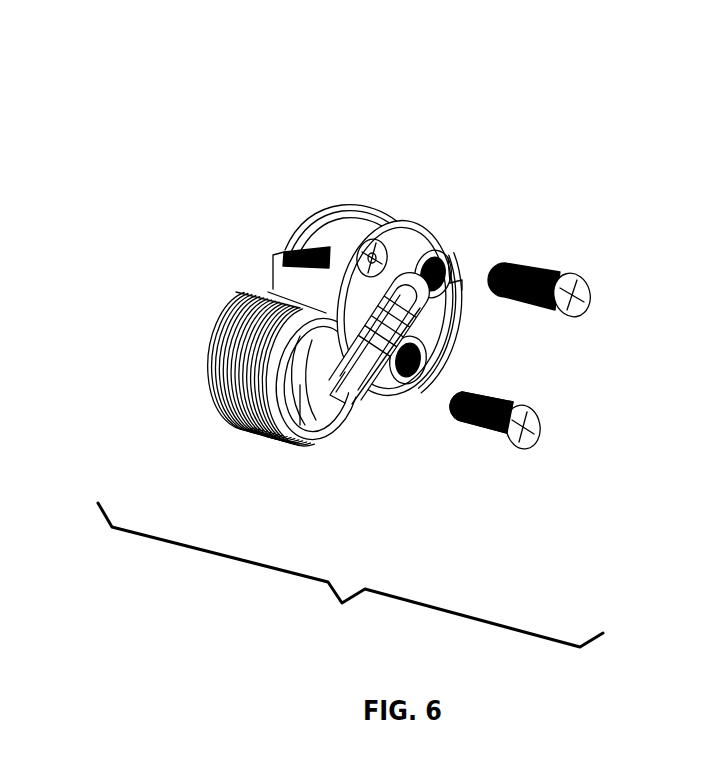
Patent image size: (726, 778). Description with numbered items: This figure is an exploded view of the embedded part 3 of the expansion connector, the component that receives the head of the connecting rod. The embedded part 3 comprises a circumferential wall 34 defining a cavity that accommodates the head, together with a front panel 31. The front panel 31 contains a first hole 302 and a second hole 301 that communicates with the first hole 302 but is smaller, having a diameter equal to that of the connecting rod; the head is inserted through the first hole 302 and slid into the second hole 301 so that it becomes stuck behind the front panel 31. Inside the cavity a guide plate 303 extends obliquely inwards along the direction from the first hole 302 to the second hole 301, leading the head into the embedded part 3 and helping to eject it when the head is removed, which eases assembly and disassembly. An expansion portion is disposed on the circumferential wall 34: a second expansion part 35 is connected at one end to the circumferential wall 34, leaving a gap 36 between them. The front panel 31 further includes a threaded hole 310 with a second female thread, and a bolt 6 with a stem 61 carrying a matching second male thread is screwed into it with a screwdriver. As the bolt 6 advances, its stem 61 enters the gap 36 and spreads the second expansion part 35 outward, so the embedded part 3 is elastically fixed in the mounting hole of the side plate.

The embedded part 3 is at (378, 222).
The front panel 31 is at (407, 257).
The threaded hole 310 is at (440, 266).
The second hole 301 is at (393, 313).
The first hole 302 is at (347, 387).
The guide plate 303 is at (302, 387).
The circumferential wall 34 is at (267, 278).
The second expansion part 35 is at (325, 210).
The gap 36 is at (283, 247).
The bolt 6 is at (588, 277).
The stem 61 is at (490, 440).